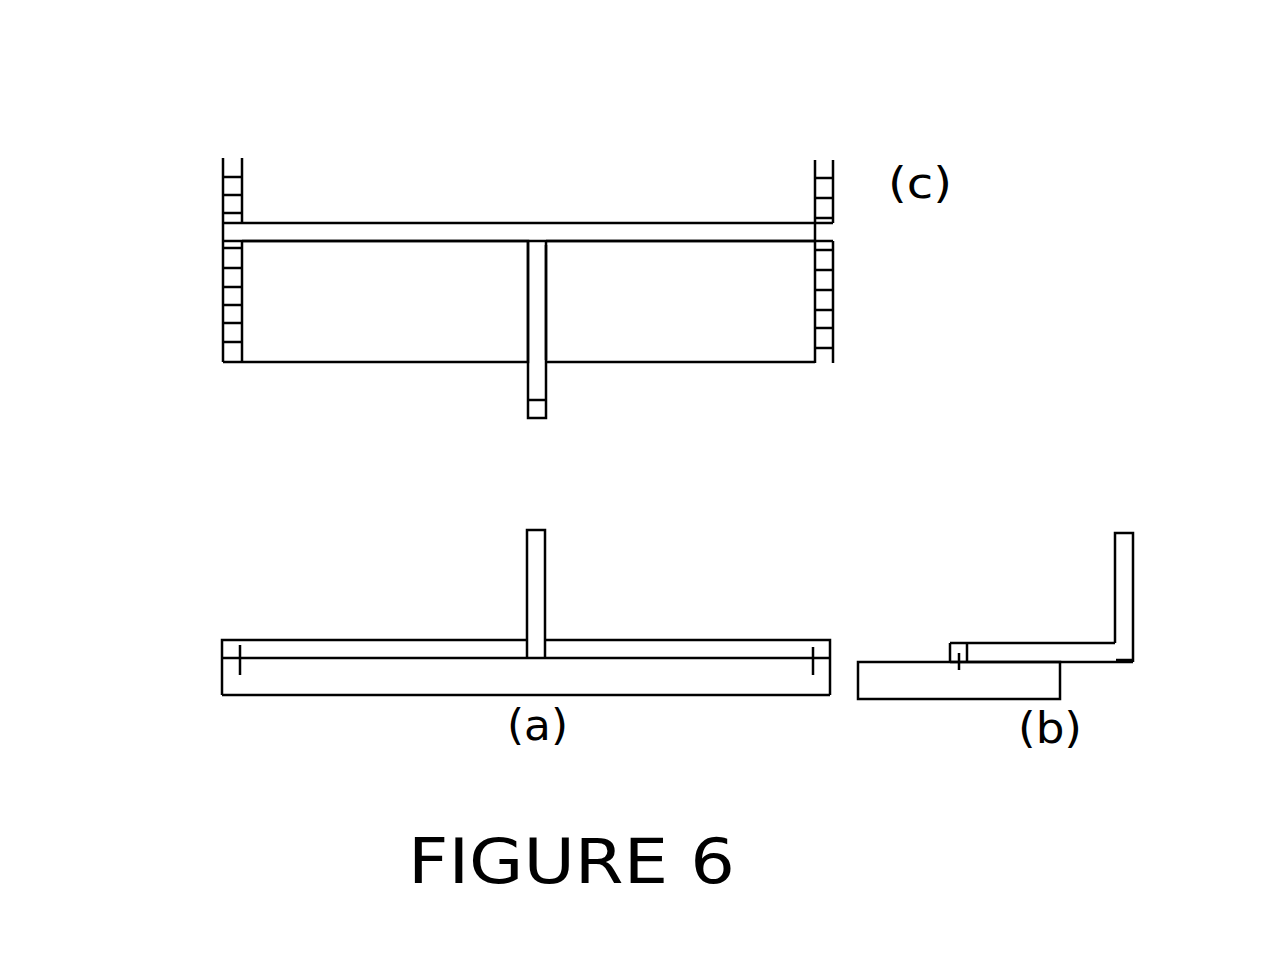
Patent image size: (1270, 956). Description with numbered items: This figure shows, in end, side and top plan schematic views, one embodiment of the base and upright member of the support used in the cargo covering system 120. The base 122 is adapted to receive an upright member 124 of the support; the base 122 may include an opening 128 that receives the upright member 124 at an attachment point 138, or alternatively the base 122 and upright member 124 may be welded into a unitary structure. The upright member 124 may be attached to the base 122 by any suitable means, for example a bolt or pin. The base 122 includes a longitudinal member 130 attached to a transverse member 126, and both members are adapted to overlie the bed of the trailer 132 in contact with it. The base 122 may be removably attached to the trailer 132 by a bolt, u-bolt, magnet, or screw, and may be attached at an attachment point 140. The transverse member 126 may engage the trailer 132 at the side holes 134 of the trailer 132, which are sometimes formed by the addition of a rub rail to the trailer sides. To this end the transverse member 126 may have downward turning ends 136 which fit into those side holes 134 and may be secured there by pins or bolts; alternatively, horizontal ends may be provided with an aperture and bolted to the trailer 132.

The cargo covering system 120 is at (880, 80).
The base 122 is at (493, 620).
The upright member 124 is at (528, 405).
The transverse member 126 is at (433, 223).
The opening 128 is at (543, 413).
The longitudinal member 130 is at (547, 283).
The trailer 132 is at (700, 353).
The side holes 134 is at (833, 282).
The downward turning ends 136 is at (240, 675).
The attachment point 138 is at (537, 648).
The attachment point 140 is at (535, 663).